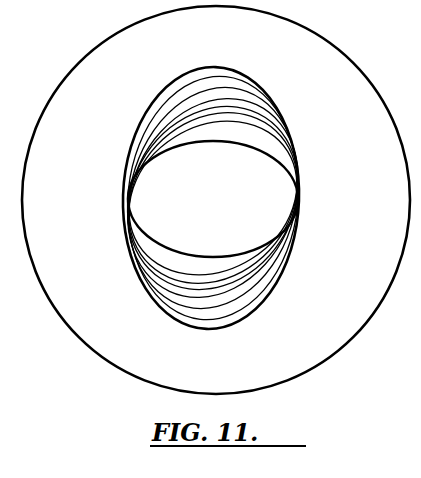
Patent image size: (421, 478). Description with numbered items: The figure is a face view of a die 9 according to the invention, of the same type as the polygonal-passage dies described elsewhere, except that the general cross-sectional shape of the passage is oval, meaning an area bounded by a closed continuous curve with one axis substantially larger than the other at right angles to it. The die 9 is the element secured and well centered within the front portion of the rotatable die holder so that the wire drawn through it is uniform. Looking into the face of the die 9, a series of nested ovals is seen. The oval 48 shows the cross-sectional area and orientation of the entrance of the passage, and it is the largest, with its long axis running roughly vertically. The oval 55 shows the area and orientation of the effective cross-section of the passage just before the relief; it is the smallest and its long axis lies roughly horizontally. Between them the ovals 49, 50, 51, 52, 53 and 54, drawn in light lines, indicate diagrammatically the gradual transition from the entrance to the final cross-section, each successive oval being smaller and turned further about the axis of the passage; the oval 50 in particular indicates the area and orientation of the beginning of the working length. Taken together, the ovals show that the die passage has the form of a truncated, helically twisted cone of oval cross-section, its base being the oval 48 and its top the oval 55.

The die 9 is at (329, 55).
The oval 48 is at (253, 73).
The oval 49 is at (278, 96).
The oval 50 is at (283, 105).
The oval 51 is at (293, 120).
The oval 52 is at (303, 135).
The oval 53 is at (308, 152).
The oval 54 is at (308, 172).
The oval 55 is at (305, 221).